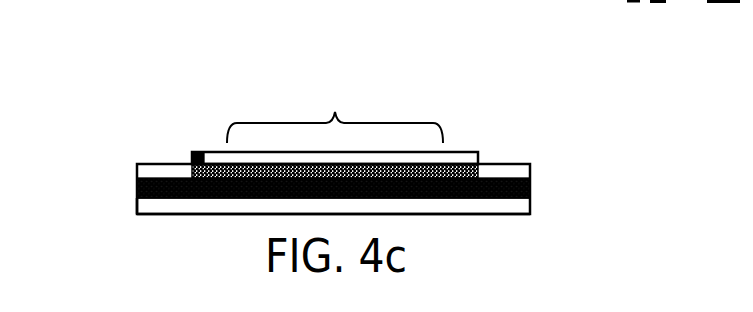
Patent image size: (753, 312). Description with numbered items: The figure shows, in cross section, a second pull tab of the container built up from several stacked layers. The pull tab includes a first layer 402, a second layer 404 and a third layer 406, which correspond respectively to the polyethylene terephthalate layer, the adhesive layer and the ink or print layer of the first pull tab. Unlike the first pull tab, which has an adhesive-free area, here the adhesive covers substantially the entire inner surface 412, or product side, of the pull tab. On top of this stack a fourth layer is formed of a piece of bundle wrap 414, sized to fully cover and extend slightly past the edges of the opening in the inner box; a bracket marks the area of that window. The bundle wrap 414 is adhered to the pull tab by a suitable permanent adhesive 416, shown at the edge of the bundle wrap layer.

The first layer 402 is at (536, 204).
The second layer 404 is at (536, 163).
The third layer 406 is at (162, 202).
The inner surface 412 is at (241, 86).
The bundle wrap 414 is at (486, 149).
The permanent adhesive 416 is at (194, 150).